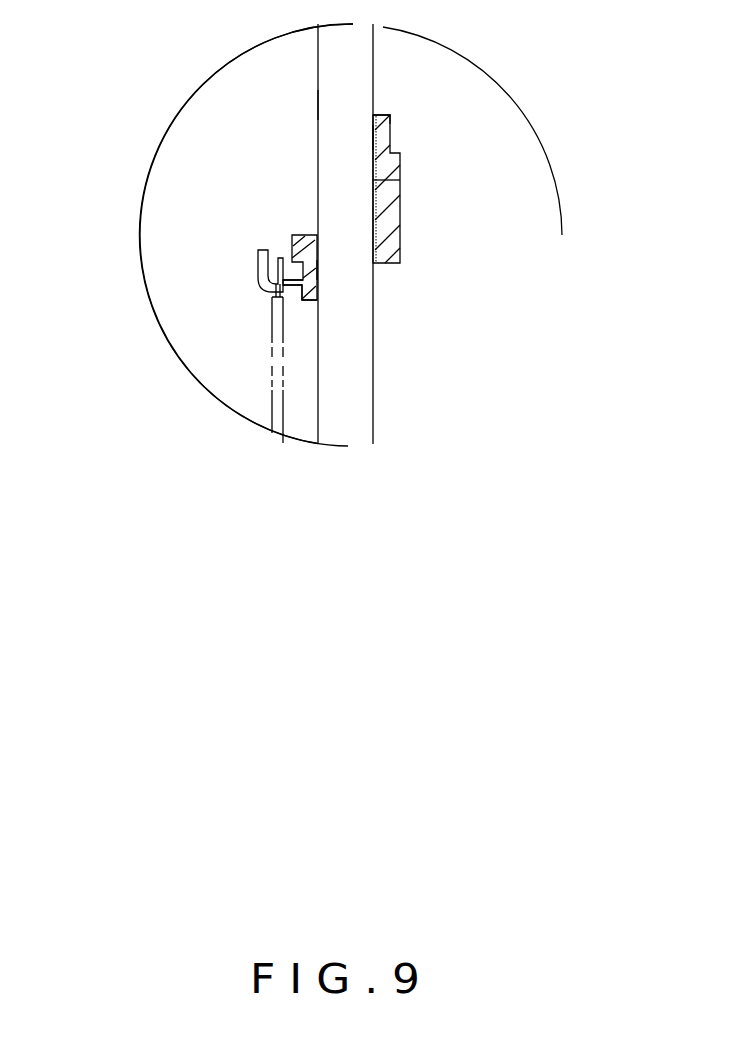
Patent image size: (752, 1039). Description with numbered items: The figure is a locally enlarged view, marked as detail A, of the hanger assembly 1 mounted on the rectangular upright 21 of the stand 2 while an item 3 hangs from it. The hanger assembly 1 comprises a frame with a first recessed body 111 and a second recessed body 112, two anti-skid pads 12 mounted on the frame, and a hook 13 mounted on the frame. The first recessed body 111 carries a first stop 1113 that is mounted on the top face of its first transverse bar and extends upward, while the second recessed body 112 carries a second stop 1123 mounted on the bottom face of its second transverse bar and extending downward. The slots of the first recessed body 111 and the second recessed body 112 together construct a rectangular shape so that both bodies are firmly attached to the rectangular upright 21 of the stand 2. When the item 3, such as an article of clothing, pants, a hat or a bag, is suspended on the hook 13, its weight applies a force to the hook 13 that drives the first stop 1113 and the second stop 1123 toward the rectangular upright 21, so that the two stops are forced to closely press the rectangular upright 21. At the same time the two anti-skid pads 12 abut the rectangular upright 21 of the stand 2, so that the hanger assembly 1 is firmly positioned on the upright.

The hanger assembly 1 is at (345, 229).
The first recessed body 111 is at (508, 139).
The first stop 1113 is at (392, 123).
The second recessed body 112 is at (182, 274).
The second stop 1123 is at (316, 286).
The anti-skid pads 12 is at (362, 137).
The hook 13 is at (243, 265).
The stand 2 is at (300, 68).
The rectangular upright 21 is at (335, 103).
The item 3 is at (250, 393).
The detail region A is at (560, 190).